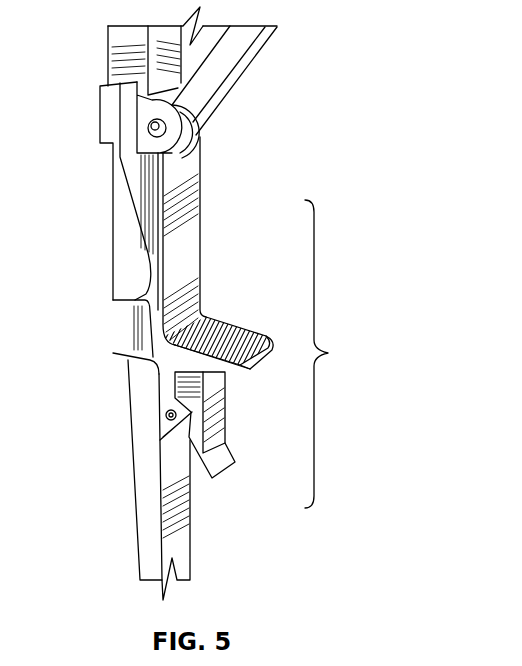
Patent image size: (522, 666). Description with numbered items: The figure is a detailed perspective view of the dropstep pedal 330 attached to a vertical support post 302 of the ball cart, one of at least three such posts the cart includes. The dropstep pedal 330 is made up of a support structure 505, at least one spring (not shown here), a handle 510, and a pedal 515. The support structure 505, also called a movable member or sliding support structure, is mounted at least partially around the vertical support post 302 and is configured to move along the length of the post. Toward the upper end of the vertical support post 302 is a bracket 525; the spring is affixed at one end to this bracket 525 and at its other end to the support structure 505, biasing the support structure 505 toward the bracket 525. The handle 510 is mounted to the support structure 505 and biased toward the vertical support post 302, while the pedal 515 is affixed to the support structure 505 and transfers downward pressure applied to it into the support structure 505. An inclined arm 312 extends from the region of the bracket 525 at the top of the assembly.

The vertical support post 302 is at (143, 465).
The arm 312 is at (217, 100).
The support structure 505 is at (188, 202).
The handle 510 is at (220, 465).
The pedal 515 is at (235, 325).
The bracket 525 is at (200, 133).
The dropstep pedal 330 is at (327, 417).